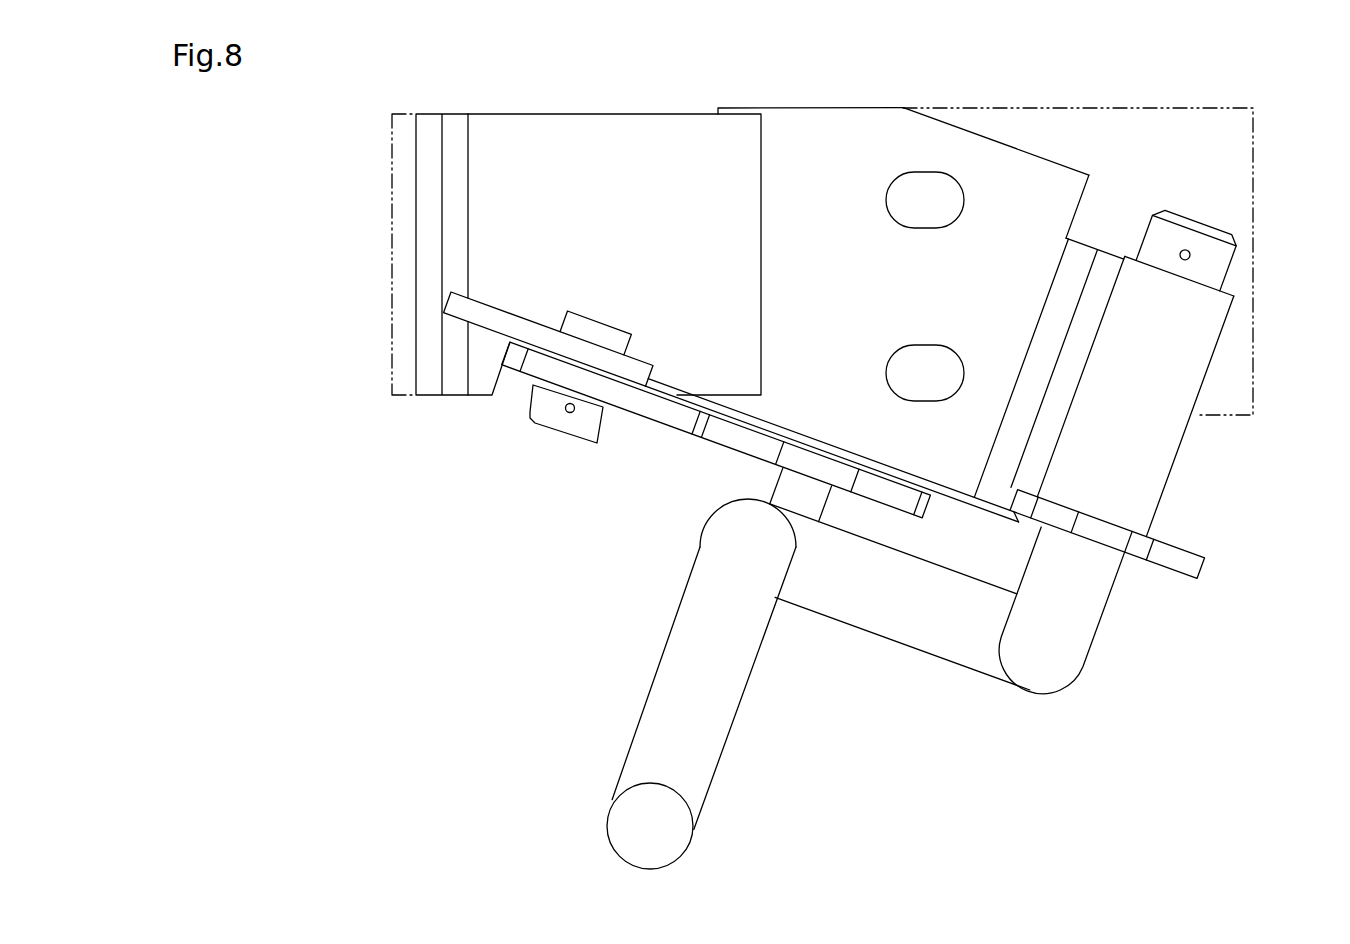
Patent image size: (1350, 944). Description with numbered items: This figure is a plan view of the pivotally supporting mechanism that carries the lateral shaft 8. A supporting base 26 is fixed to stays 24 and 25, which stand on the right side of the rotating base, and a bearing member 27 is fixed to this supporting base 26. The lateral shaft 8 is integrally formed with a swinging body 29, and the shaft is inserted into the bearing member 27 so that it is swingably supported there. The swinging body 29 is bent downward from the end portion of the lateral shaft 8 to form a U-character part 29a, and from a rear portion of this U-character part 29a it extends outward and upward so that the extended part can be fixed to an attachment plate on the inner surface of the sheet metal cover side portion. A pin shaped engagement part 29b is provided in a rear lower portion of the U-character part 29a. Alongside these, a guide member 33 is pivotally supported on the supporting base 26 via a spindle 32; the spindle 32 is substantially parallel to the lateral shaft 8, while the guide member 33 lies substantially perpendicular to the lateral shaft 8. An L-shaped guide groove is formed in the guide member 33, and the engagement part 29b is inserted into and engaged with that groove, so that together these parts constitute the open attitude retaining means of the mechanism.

The lateral shaft 8 is at (1083, 617).
The stay 24 is at (405, 382).
The stay 25 is at (1253, 192).
The supporting base 26 is at (658, 128).
The bearing member 27 is at (1143, 488).
The swinging body 29 is at (668, 627).
The U-character part 29a is at (922, 635).
The engagement part 29b is at (817, 508).
The spindle 32 is at (545, 412).
The guide member 33 is at (675, 415).